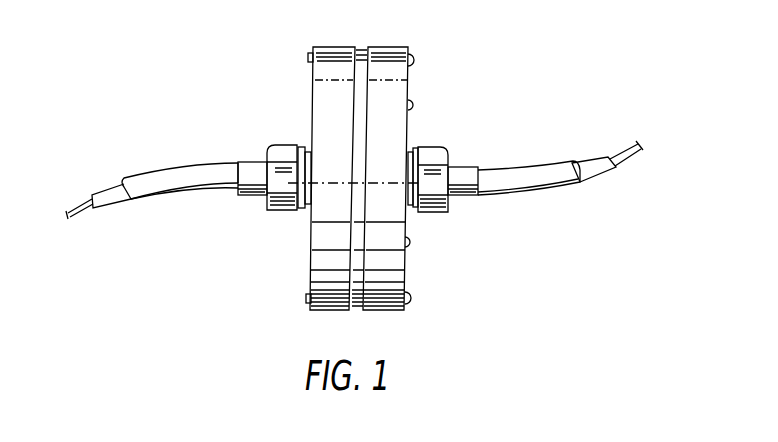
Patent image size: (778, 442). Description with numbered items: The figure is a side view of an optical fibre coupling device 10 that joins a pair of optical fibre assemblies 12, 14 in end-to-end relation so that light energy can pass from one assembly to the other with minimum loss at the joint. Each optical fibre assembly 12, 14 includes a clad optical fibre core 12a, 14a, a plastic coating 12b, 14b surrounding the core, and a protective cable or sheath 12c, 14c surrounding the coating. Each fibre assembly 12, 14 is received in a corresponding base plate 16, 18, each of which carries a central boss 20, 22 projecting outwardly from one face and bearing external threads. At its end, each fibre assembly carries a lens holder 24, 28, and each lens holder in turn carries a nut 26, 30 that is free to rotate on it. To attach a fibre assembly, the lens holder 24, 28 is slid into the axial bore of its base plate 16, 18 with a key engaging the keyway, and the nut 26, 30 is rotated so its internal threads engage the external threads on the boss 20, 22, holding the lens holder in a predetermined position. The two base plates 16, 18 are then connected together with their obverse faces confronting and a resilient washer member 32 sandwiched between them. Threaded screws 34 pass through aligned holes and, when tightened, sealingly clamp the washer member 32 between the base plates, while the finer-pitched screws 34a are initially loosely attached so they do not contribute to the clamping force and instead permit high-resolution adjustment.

The optical fibre coupling device 10 is at (384, 40).
The optical fibre assembly 12 is at (537, 165).
The clad optical fibre core 12a is at (622, 157).
The plastic coating 12b is at (587, 176).
The protective cable or sheath 12c is at (542, 193).
The optical fibre assembly 14 is at (180, 156).
The clad optical fibre core 14a is at (82, 216).
The plastic coating 14b is at (115, 204).
The protective cable or sheath 14c is at (173, 181).
The base plate 16 is at (410, 100).
The base plate 18 is at (313, 95).
The central boss 20 is at (406, 152).
The central boss 22 is at (308, 150).
The lens holder 24 is at (462, 168).
The nut 26 is at (433, 213).
The lens holder 28 is at (246, 161).
The nut 30 is at (283, 210).
The resilient washer member 32 is at (361, 50).
The threaded screws 34 is at (417, 62).
The threaded screws 34a is at (414, 112).